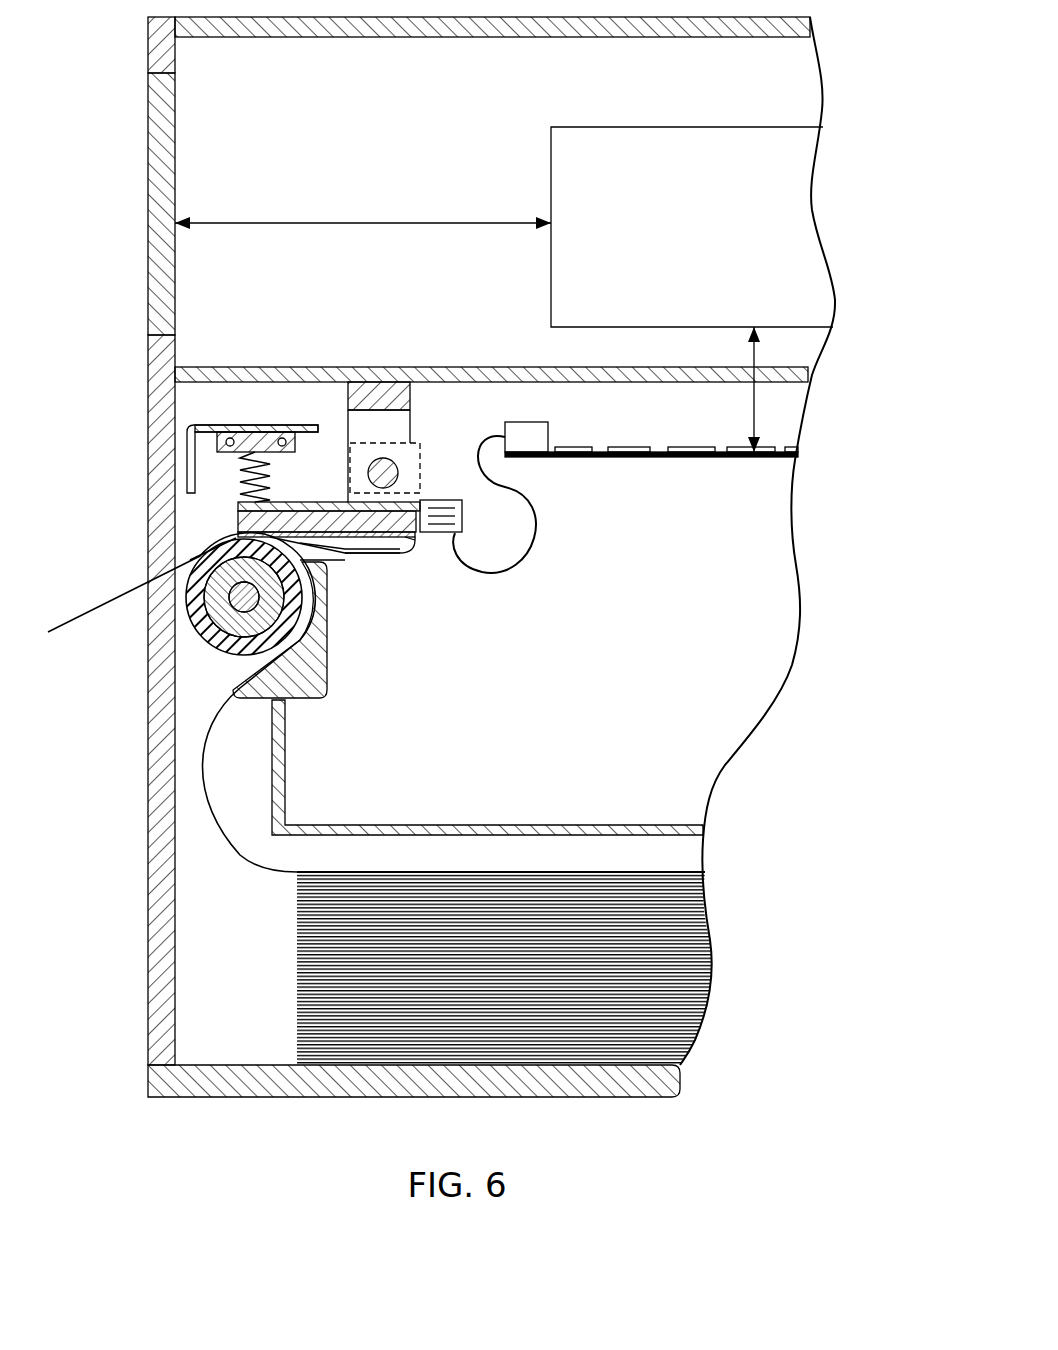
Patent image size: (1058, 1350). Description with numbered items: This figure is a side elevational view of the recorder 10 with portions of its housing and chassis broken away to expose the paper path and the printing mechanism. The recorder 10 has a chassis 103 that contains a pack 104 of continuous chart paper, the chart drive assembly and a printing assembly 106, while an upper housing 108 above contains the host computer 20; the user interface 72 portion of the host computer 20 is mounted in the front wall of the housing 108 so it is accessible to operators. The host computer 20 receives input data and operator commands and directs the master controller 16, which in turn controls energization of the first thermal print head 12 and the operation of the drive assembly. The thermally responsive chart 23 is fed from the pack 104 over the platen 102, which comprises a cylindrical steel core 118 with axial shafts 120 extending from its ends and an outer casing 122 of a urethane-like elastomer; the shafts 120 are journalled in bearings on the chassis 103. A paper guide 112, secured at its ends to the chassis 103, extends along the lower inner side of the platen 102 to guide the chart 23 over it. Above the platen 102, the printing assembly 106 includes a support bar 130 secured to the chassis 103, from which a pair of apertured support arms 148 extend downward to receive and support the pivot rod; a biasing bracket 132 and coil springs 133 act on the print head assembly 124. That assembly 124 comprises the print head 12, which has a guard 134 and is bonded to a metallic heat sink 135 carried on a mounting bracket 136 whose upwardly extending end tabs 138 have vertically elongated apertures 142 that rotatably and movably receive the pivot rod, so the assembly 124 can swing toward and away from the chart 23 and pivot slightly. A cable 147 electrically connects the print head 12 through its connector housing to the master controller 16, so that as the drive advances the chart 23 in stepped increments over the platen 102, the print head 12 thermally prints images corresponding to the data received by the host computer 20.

The recorder 10 is at (198, 1152).
The first thermal print head 12 is at (350, 555).
The master controller 16 is at (640, 459).
The host computer 20 is at (684, 303).
The thermally responsive chart 23 is at (240, 850).
The user interface 72 is at (147, 255).
The platen 102 is at (322, 695).
The chassis 103 is at (590, 1080).
The pack of continuous chart paper 104 is at (296, 943).
The printing assembly 106 is at (340, 562).
The upper housing 108 is at (192, 303).
The paper guide 112 is at (330, 650).
The cylindrical steel core 118 is at (210, 607).
The axial shafts 120 is at (222, 640).
The outer casing 122 is at (207, 555).
The first print head assembly 124 is at (318, 494).
The support bar 130 is at (388, 395).
The biasing bracket 132 is at (290, 425).
The coil springs 133 is at (262, 430).
The guard 134 is at (372, 545).
The heat sink 135 is at (395, 541).
The mounting bracket 136 is at (420, 535).
The end tabs 138 is at (422, 468).
The apertures 142 is at (395, 462).
The cable 147 is at (522, 560).
The support arms 148 is at (400, 428).